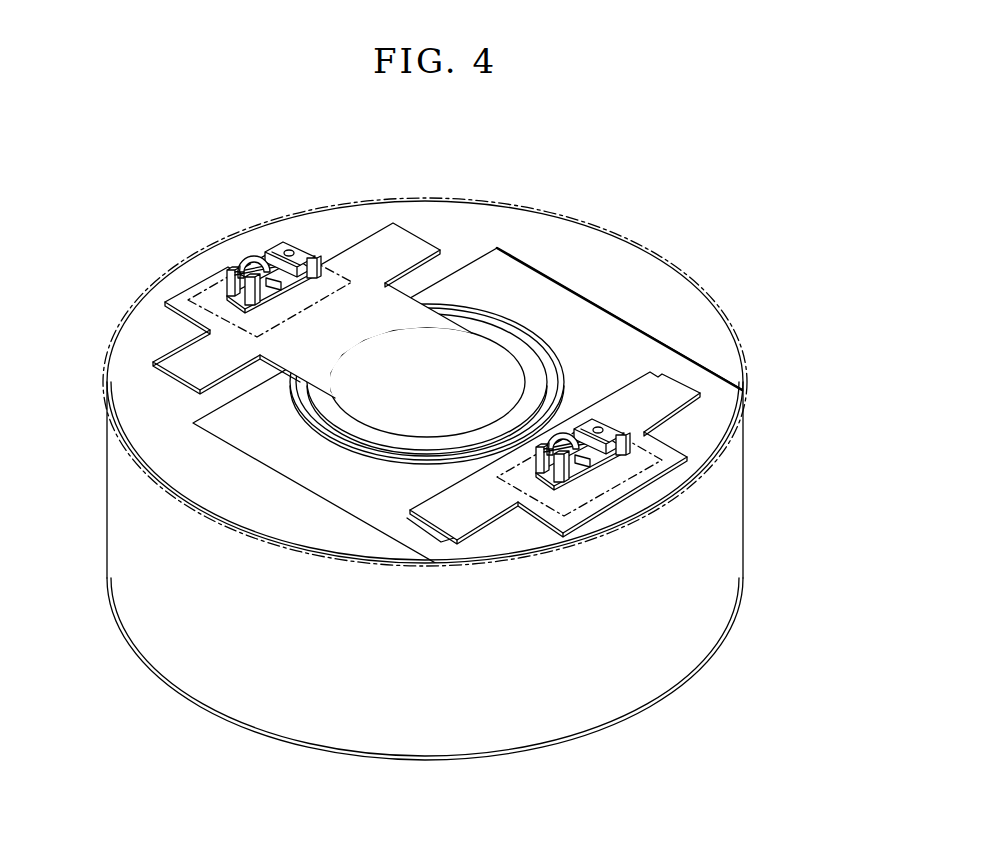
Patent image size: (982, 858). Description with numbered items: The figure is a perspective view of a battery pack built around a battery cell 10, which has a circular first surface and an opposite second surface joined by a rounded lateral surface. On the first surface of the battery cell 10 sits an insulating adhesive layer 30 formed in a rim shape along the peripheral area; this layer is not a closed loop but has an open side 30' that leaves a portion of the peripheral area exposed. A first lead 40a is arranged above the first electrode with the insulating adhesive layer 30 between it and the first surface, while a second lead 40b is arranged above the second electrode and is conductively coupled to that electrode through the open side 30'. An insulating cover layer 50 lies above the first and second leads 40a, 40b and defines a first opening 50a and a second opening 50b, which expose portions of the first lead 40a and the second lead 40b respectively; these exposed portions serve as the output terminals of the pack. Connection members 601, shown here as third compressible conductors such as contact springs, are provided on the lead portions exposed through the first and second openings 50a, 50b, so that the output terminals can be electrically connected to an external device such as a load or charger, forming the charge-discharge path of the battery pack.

The battery cell 10 is at (725, 538).
The insulating cover layer 50 is at (502, 198).
The insulating adhesive layer 30 is at (545, 408).
The open side 30' is at (619, 262).
The first lead 40a is at (167, 362).
The second lead 40b is at (667, 394).
The first opening 50a is at (200, 287).
The second opening 50b is at (662, 456).
The connection member 601 is at (263, 250).